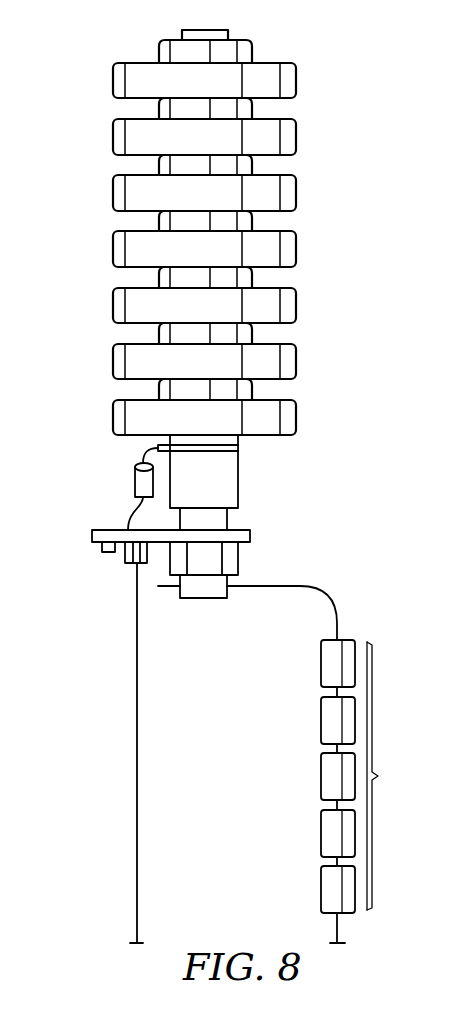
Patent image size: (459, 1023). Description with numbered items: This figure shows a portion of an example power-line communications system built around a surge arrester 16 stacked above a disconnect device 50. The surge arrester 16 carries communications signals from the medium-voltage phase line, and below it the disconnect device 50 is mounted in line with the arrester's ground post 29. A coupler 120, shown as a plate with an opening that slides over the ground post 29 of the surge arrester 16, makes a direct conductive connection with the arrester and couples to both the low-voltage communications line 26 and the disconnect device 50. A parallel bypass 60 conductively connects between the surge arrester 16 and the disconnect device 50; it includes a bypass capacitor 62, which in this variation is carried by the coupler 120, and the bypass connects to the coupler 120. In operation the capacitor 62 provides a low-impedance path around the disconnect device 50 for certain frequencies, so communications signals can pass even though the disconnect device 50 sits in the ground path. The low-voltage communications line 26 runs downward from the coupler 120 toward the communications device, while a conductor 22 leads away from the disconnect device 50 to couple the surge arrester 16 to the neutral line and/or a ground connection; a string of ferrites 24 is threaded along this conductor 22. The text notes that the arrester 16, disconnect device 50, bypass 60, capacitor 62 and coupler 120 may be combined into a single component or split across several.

The surge arrester 16 is at (113, 190).
The disconnect device 50 is at (238, 478).
The parallel bypass 60 is at (141, 455).
The bypass capacitor 62 is at (133, 480).
The ground post 29 is at (227, 517).
The coupler 120 is at (92, 535).
The low-voltage communications line 26 is at (133, 770).
The ferrites 24 is at (285, 749).
The conductor 22 is at (340, 938).